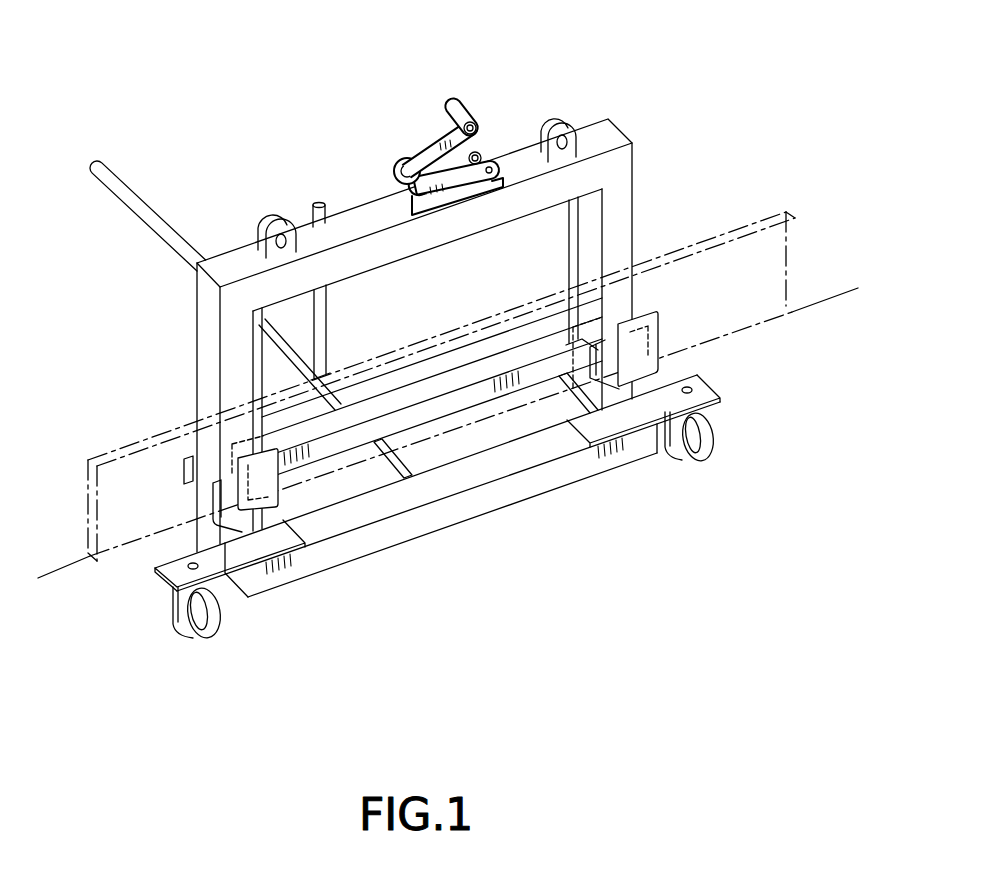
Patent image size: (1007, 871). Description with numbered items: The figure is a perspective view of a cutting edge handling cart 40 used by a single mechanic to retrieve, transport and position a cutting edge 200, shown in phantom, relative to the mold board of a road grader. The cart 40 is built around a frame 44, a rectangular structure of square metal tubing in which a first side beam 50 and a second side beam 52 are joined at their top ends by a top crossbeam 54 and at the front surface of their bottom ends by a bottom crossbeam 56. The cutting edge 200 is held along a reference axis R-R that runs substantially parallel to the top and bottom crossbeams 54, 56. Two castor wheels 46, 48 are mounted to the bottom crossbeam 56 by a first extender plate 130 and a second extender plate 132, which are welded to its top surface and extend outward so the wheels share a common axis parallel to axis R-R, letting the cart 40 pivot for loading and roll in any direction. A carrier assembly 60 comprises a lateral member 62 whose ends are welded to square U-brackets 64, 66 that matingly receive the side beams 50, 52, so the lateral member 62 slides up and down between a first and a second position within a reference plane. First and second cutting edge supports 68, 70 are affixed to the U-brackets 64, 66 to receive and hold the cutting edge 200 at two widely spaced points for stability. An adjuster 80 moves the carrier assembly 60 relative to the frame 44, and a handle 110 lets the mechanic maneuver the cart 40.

The cutting edge handling cart 40 is at (690, 94).
The frame 44 is at (190, 318).
The wheel 46 is at (708, 448).
The wheel 48 is at (214, 623).
The first side beam 50 is at (626, 184).
The second side beam 52 is at (205, 366).
The top crossbeam 54 is at (440, 227).
The bottom crossbeam 56 is at (435, 524).
The carrier assembly 60 is at (480, 412).
The lateral member 62 is at (537, 425).
The U-bracket 64 is at (603, 343).
The U-bracket 66 is at (186, 472).
The first cutting edge support 68 is at (645, 343).
The second cutting edge support 70 is at (245, 497).
The adjuster 80 is at (397, 150).
The handle 110 is at (112, 167).
The first extender plate 130 is at (704, 390).
The second extender plate 132 is at (157, 569).
The cutting edge 200 is at (794, 314).